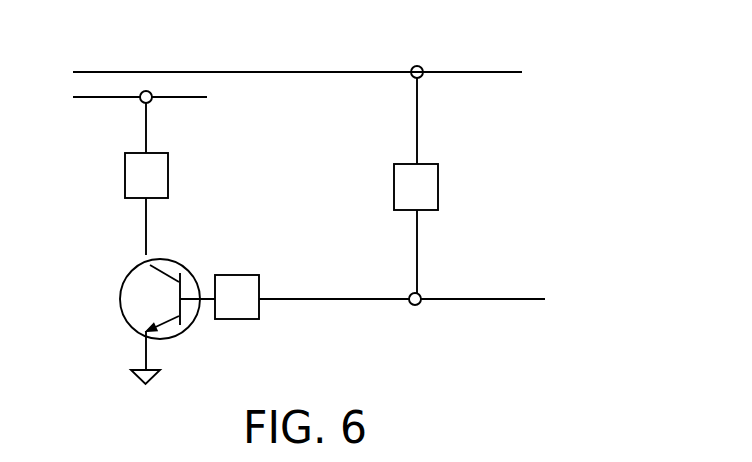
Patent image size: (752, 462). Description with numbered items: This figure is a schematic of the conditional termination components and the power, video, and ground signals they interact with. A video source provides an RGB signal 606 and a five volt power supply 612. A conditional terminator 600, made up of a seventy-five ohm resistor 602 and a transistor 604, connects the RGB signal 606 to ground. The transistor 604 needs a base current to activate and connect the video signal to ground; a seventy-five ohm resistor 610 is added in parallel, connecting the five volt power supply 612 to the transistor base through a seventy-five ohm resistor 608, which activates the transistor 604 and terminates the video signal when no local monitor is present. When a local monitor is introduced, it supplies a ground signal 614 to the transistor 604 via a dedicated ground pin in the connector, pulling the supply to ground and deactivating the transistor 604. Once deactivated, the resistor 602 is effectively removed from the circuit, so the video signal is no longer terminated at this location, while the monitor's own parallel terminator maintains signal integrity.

The conditional terminator 600 is at (202, 178).
The 75-Ohm resistor 602 is at (128, 176).
The transistor 604 is at (131, 303).
The RGB signal 606 is at (95, 99).
The 75-Ohm resistor 608 is at (252, 310).
The 75-Ohm resistor 610 is at (430, 187).
The +5 volt power supply 612 is at (462, 72).
The ground signal 614 is at (440, 301).